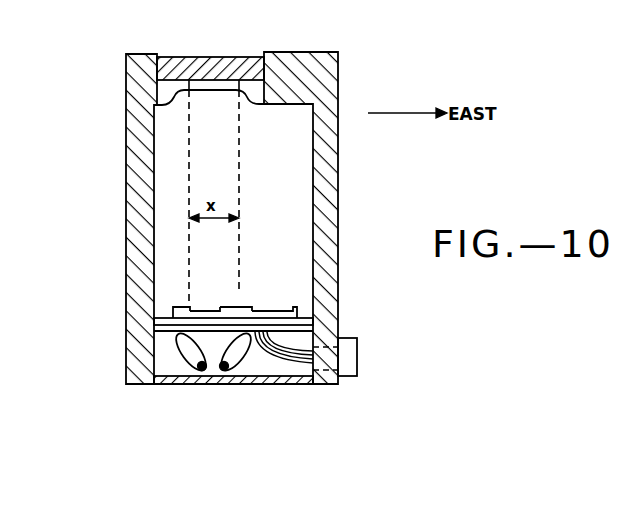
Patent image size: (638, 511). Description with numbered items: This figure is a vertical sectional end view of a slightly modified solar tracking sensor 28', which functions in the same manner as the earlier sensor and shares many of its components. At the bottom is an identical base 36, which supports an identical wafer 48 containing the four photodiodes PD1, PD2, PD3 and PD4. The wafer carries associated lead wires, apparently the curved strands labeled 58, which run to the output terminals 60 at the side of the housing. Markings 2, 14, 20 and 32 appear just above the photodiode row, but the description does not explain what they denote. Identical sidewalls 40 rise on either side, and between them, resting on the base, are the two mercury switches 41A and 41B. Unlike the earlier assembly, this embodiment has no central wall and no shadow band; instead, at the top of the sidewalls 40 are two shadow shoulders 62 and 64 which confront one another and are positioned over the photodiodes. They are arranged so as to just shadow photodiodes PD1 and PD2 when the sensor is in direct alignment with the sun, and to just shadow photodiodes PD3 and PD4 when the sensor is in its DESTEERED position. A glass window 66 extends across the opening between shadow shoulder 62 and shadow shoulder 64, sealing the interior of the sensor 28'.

The modified sensor 28' is at (60, 108).
The glass window 66 is at (210, 57).
The shadow shoulder 62 is at (172, 96).
The shadow shoulder 64 is at (271, 105).
The sidewalls 40 is at (126, 198).
The wafer 48 is at (273, 306).
The photodetector element 2 is at (181, 302).
The photodetector element 14 is at (205, 298).
The photodetector element 20 is at (242, 298).
The photodetector element 32 is at (275, 302).
The photodiode PD1 is at (175, 300).
The photodiode PD2 is at (233, 305).
The photodiode PD3 is at (229, 305).
The photodiode PD4 is at (292, 305).
The mercury switch 41A is at (202, 370).
The mercury switch 41B is at (223, 372).
The fiber optic bundle 58 is at (290, 349).
The output terminals 60 is at (357, 350).
The base 36 is at (275, 385).